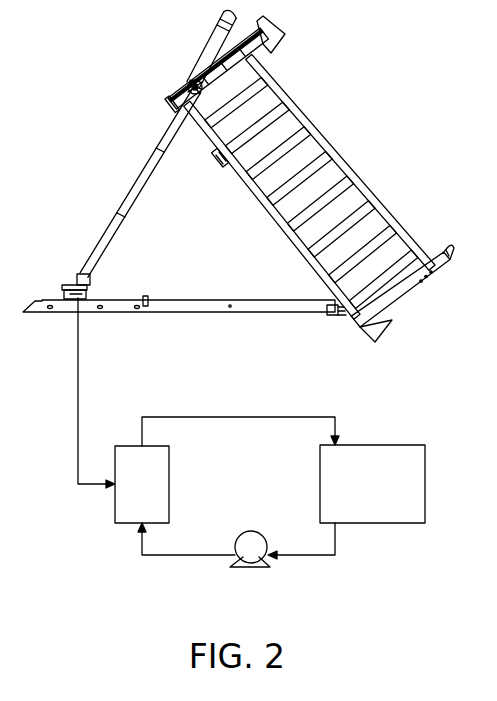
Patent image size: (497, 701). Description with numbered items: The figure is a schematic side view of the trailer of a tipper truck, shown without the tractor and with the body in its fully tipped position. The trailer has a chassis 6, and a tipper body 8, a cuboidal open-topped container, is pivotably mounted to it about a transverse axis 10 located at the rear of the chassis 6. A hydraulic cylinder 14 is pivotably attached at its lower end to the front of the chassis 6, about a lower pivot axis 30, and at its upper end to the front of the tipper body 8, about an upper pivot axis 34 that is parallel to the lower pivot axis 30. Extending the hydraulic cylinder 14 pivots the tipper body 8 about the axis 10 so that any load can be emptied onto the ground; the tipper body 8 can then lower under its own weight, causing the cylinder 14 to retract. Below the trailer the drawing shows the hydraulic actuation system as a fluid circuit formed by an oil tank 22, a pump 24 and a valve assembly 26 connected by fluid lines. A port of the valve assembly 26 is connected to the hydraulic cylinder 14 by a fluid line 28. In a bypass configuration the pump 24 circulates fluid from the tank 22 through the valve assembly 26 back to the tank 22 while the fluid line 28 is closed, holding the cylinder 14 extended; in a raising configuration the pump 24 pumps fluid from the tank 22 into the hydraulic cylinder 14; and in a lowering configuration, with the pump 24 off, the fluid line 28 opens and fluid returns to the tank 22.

The trailer chassis 6 is at (185, 304).
The tipper body 8 is at (352, 163).
The transverse axis 10 is at (338, 316).
The hydraulic cylinder 14 is at (134, 171).
The oil tank 22 is at (428, 490).
The pump 24 is at (246, 568).
The valve assembly 26 is at (128, 524).
The fluid line 28 is at (78, 400).
The lower pivot axis 30 is at (62, 287).
The upper pivot axis 34 is at (193, 81).